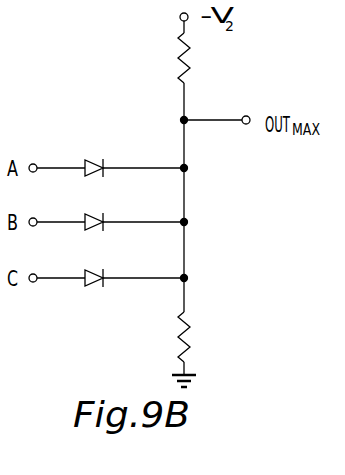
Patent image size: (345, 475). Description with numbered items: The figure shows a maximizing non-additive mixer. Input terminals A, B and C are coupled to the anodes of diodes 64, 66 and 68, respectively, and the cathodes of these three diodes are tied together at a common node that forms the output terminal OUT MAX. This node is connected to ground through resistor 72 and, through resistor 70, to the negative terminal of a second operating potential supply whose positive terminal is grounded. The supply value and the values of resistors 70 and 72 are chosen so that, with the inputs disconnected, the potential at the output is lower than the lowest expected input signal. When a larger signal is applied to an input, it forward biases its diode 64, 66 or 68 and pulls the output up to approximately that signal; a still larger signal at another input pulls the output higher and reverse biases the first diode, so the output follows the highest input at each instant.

The diode 64 is at (101, 157).
The diode 66 is at (101, 192).
The diode 68 is at (100, 268).
The resistor 70 is at (194, 56).
The resistor 72 is at (193, 335).